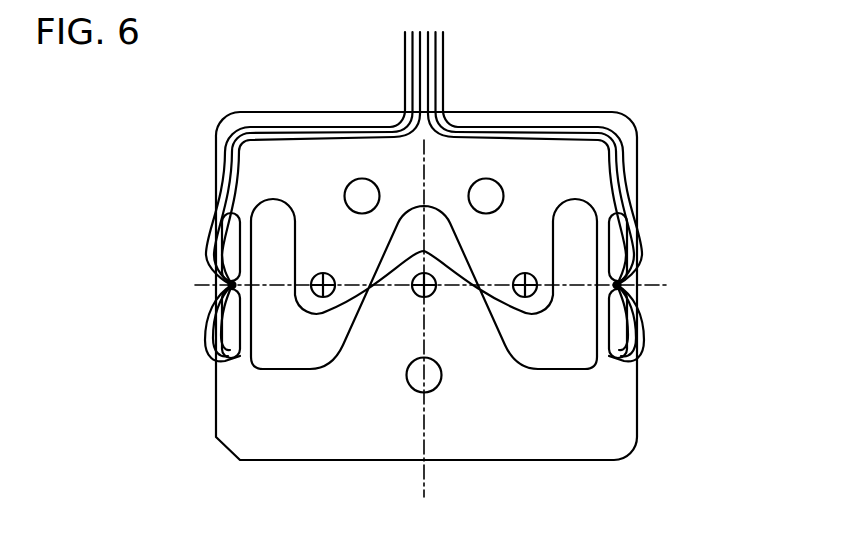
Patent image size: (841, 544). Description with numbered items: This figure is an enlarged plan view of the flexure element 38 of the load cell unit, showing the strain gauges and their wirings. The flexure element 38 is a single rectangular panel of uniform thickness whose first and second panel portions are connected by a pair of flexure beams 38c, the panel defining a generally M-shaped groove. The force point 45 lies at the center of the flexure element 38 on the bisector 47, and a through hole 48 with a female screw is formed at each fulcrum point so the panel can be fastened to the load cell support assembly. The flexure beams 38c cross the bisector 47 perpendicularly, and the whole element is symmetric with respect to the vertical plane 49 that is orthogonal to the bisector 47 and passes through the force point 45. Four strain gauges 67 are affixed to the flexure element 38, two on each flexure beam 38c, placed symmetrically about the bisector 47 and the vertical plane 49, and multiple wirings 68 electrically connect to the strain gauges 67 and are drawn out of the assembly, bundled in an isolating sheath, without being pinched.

The flexure element 38 is at (582, 110).
The flexure beams 38c is at (228, 290).
The force point 45 is at (419, 296).
The bisector 47 is at (667, 283).
The through hole 48 is at (312, 293).
The vertical plane 49 is at (424, 478).
The strain gauges 67 is at (228, 243).
The wirings 68 is at (228, 145).